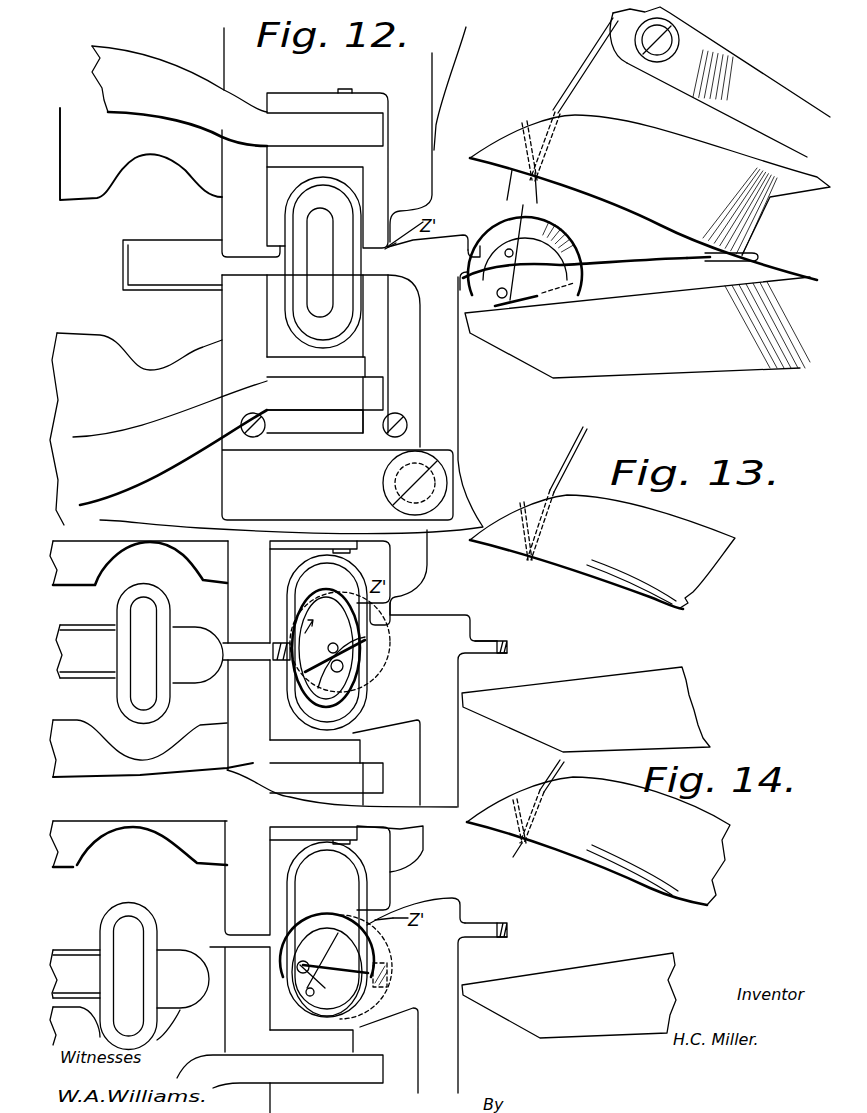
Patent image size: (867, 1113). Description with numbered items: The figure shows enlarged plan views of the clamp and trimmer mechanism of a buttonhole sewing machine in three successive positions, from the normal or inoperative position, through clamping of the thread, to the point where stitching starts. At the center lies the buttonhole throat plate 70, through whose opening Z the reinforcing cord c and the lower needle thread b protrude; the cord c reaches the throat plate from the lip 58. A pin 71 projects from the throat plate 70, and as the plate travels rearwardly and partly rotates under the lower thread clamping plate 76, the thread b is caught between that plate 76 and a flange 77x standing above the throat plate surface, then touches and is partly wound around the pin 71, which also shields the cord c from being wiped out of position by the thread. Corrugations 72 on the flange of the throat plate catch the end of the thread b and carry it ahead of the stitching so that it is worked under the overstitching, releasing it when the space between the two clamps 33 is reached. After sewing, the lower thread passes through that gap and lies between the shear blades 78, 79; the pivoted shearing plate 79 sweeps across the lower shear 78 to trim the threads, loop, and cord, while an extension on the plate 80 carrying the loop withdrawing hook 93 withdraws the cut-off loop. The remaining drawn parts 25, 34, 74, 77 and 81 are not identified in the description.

In FIG. 12, the slotted link plate 25 is at (320, 262).
In FIG. 13, the slotted link plate 25 is at (139, 654).
In FIG. 14, the slotted link plate 25 is at (129, 976).
In FIG. 12, the clamp 33 is at (333, 262).
In FIG. 13, the clamp 33 is at (320, 648).
In FIG. 14, the clamp 33 is at (319, 937).
In FIG. 12, the lever bar 34 is at (158, 285).
In FIG. 13, the lever bar 34 is at (151, 659).
In FIG. 14, the lever bar 34 is at (216, 954).
In FIG. 12, the lip 58 is at (697, 264).
In FIG. 12, the buttonhole throat plate 70 is at (573, 263).
In FIG. 13, the buttonhole throat plate 70 is at (326, 648).
In FIG. 14, the buttonhole throat plate 70 is at (363, 933).
In FIG. 12, the pin 71 is at (531, 252).
In FIG. 13, the pin 71 is at (360, 643).
In FIG. 14, the pin 71 is at (303, 967).
In FIG. 12, the corrugations 72 is at (553, 240).
In FIG. 13, the corrugations 72 is at (400, 647).
In FIG. 14, the corrugations 72 is at (387, 967).
In FIG. 12, the block 74 is at (163, 253).
In FIG. 12, the lower thread clamping plate 76 is at (428, 259).
In FIG. 13, the lower thread clamping plate 76 is at (430, 668).
In FIG. 14, the lower thread clamping plate 76 is at (433, 995).
In FIG. 12, the stop lip 77 is at (473, 238).
In FIG. 13, the stop lip 77 is at (490, 653).
In FIG. 14, the stop lip 77 is at (473, 933).
In FIG. 12, the flange 77x is at (560, 225).
In FIG. 13, the flange 77x is at (510, 635).
In FIG. 14, the flange 77x is at (508, 932).
In FIG. 12, the lower shear 78 is at (637, 327).
In FIG. 13, the lower shear 78 is at (586, 709).
In FIG. 14, the lower shear 78 is at (569, 995).
In FIG. 12, the shearing plate 79 is at (650, 197).
In FIG. 13, the shearing plate 79 is at (602, 552).
In FIG. 14, the shearing plate 79 is at (598, 841).
In FIG. 12, the plate 80 is at (773, 83).
In FIG. 12, the needle 81 is at (574, 99).
In FIG. 13, the needle 81 is at (557, 493).
In FIG. 14, the needle 81 is at (539, 800).
In FIG. 12, the loop withdrawing hook 93 is at (540, 123).
In FIG. 13, the loop withdrawing hook 93 is at (521, 503).
In FIG. 14, the loop withdrawing hook 93 is at (516, 838).
In FIG. 12, the opening Z is at (522, 305).
In FIG. 13, the opening Z is at (335, 668).
In FIG. 14, the opening Z is at (310, 993).
In FIG. 12, the lower needle thread b is at (516, 226).
In FIG. 13, the lower needle thread b is at (341, 673).
In FIG. 14, the lower needle thread b is at (318, 960).
In FIG. 12, the reinforcing cord c is at (499, 309).
In FIG. 13, the reinforcing cord c is at (334, 642).
In FIG. 14, the reinforcing cord c is at (316, 1001).